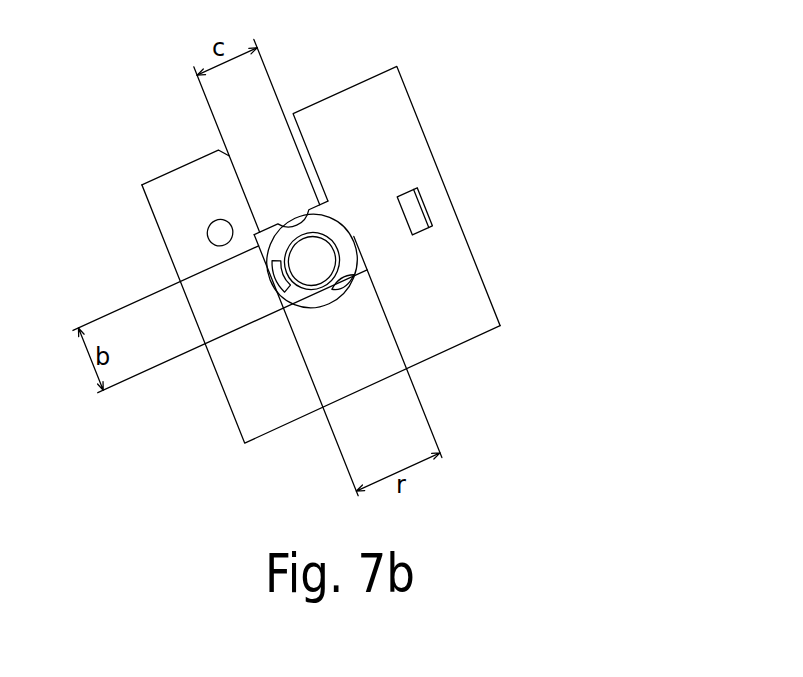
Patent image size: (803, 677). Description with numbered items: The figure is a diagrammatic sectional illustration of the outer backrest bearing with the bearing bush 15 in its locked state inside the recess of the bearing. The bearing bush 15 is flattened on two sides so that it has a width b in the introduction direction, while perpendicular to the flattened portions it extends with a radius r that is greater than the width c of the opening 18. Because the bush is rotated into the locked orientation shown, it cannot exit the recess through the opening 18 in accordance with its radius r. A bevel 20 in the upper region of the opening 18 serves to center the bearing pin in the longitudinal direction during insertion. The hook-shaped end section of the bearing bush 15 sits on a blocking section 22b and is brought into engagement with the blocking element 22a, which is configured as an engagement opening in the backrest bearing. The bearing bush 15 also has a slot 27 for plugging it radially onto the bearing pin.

The bearing bush 15 is at (318, 261).
The opening 18 is at (268, 157).
The bevel 20 is at (290, 114).
The blocking element 22a is at (433, 212).
The blocking section 22b is at (428, 192).
The slot 27 is at (277, 277).